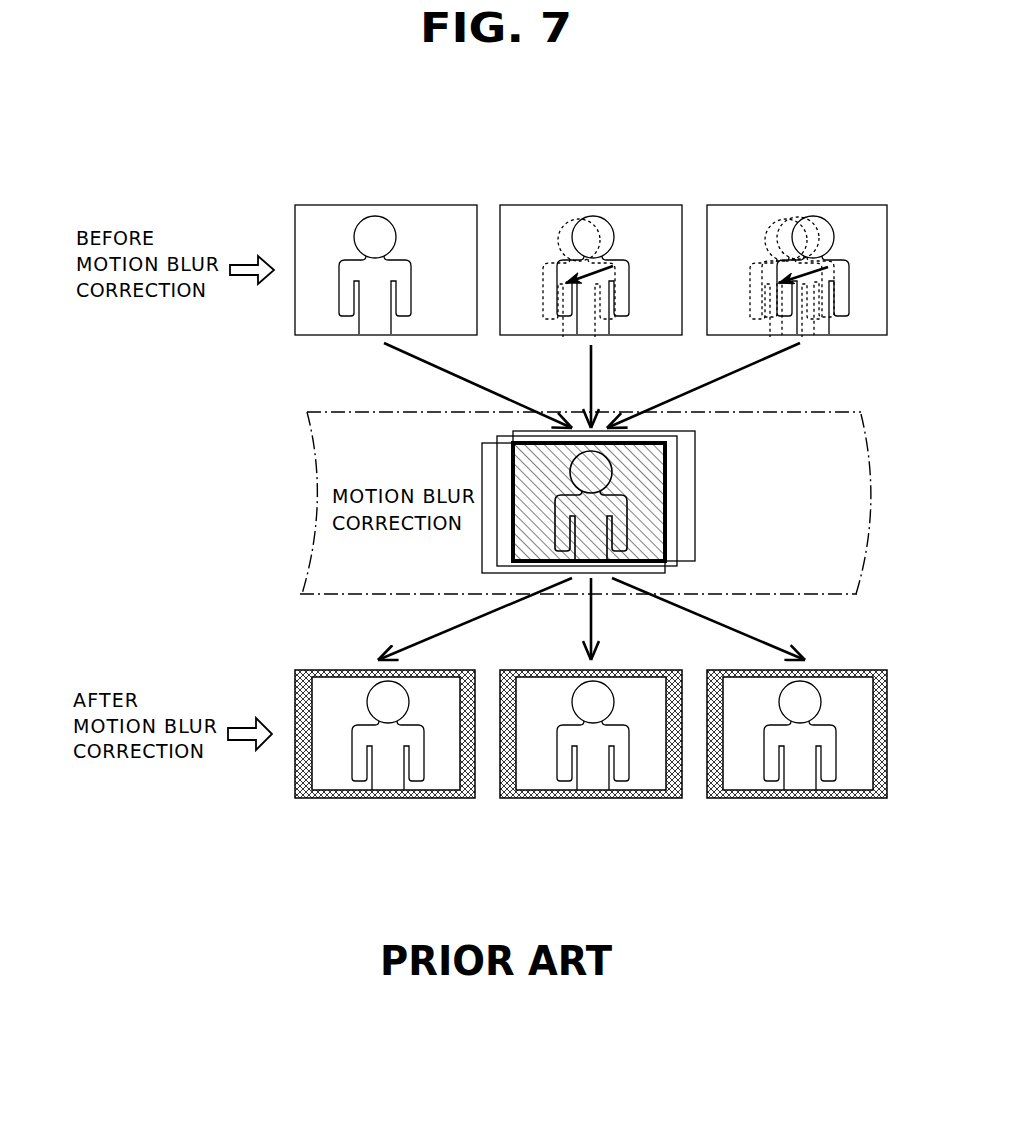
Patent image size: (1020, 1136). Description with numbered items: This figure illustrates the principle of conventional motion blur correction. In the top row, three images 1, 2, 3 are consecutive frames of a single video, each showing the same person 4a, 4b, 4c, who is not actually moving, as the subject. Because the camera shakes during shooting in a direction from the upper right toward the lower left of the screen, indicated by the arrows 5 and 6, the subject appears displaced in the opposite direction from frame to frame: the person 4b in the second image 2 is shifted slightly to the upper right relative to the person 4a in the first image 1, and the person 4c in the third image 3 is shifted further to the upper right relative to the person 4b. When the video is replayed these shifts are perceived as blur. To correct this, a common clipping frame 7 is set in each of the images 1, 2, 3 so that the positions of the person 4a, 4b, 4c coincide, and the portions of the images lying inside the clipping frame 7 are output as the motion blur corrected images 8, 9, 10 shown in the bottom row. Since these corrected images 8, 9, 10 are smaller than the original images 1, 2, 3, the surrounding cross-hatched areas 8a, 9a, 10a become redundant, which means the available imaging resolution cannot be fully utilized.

The first image 1 is at (398, 205).
The second image 2 is at (603, 205).
The third image 3 is at (808, 205).
The person 4a is at (352, 260).
The person 4b is at (618, 253).
The person 4c is at (833, 251).
The arrow 5 is at (584, 285).
The arrow 6 is at (808, 285).
The clipping frame 7 is at (668, 524).
The motion blur corrected image 8 is at (440, 787).
The cross-hatched area 8a is at (475, 773).
The motion blur corrected image 9 is at (646, 787).
The cross-hatched area 9a is at (682, 773).
The motion blur corrected image 10 is at (853, 787).
The cross-hatched area 10a is at (890, 773).